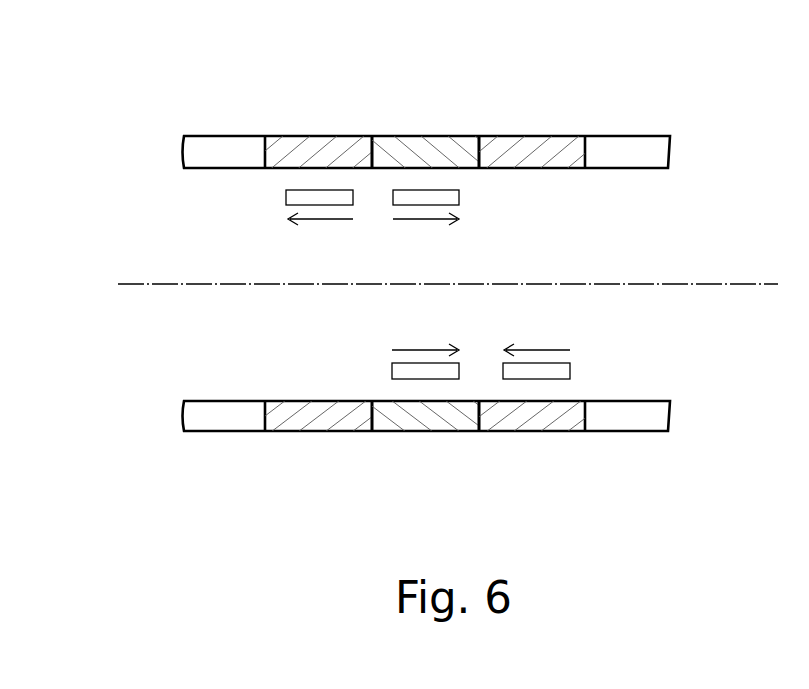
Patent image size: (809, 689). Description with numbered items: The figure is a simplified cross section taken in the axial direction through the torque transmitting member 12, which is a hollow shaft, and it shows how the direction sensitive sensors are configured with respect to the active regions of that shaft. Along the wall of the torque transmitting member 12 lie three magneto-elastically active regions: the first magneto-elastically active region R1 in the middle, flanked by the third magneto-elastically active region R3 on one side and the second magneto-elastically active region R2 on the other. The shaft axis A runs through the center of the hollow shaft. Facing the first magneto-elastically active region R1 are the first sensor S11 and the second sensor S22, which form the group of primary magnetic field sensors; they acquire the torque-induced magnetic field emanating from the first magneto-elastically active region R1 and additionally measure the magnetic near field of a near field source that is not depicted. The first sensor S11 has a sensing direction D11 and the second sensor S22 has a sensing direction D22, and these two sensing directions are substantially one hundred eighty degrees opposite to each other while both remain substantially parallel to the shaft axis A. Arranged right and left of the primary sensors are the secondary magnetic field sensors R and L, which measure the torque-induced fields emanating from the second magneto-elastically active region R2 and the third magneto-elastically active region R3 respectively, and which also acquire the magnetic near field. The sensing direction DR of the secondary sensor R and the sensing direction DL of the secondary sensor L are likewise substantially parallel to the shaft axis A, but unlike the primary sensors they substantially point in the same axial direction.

The torque transmitting member 12 is at (627, 136).
The third magneto-elastically active region R3 is at (320, 136).
The first magneto-elastically active region R1 is at (425, 136).
The second magneto-elastically active region R2 is at (527, 136).
The shaft axis A is at (745, 284).
The secondary magnetic field sensor L is at (286, 193).
The sensing direction of the secondary sensor L DL is at (323, 219).
The first sensor S11 is at (459, 195).
The sensing direction of the first sensor D11 is at (430, 219).
The second sensor S22 is at (392, 371).
The sensing direction of the second sensor D22 is at (420, 350).
The secondary magnetic field sensor R is at (570, 371).
The sensing direction of the secondary sensor R DR is at (540, 350).